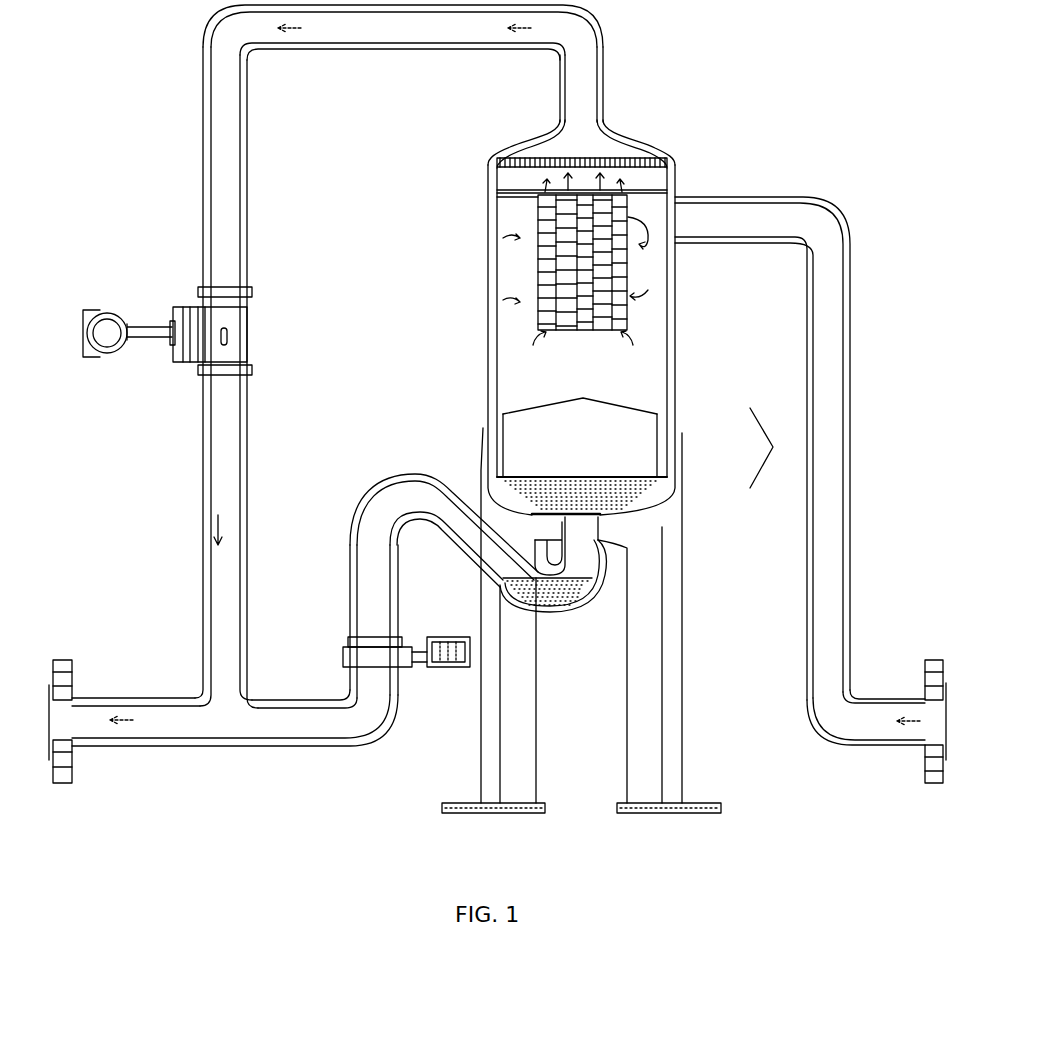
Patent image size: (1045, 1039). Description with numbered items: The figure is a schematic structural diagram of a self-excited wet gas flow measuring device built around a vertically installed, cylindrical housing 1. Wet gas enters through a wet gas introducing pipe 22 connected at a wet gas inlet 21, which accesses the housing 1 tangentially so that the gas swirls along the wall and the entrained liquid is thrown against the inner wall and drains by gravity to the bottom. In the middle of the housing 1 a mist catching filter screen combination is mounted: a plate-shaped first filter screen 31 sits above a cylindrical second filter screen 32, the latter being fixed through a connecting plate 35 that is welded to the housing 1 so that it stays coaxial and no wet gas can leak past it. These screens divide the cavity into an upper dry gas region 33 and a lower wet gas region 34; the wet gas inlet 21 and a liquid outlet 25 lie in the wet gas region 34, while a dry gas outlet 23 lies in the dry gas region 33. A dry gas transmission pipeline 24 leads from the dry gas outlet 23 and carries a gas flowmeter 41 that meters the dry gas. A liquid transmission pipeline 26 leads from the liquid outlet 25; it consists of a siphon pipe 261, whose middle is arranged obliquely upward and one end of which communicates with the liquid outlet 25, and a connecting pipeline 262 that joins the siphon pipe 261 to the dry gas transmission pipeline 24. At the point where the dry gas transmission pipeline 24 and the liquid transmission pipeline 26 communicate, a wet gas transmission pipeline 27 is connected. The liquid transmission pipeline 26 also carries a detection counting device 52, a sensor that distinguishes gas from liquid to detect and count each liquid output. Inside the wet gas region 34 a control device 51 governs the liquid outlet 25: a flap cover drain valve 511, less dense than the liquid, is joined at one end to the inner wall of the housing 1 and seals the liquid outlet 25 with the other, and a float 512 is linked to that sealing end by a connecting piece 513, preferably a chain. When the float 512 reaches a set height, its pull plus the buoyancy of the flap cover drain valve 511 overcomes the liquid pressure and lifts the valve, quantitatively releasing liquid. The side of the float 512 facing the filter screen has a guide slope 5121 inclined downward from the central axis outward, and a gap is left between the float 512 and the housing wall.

The housing 1 is at (650, 140).
The wet gas inlet 21 is at (925, 708).
The wet gas introducing pipe 22 is at (858, 495).
The dry gas outlet 23 is at (585, 125).
The dry gas transmission pipeline 24 is at (346, 52).
The liquid outlet 25 is at (583, 548).
The liquid transmission pipeline 26 is at (305, 495).
The siphon pipe 261 is at (453, 540).
The connecting pipeline 262 is at (352, 565).
The wet gas transmission pipeline 27 is at (118, 740).
The first filter screen 31 is at (497, 165).
The second filter screen 32 is at (538, 265).
The dry gas region 33 is at (540, 143).
The wet gas region 34 is at (517, 360).
The connecting plate 35 is at (497, 195).
The gas flowmeter 41 is at (105, 310).
The control device 51 is at (780, 448).
The flap cover drain valve 511 is at (587, 528).
The float 512 is at (633, 425).
The guide slope 5121 is at (605, 403).
The connecting piece 513 is at (570, 492).
The detection counting device 52 is at (345, 665).